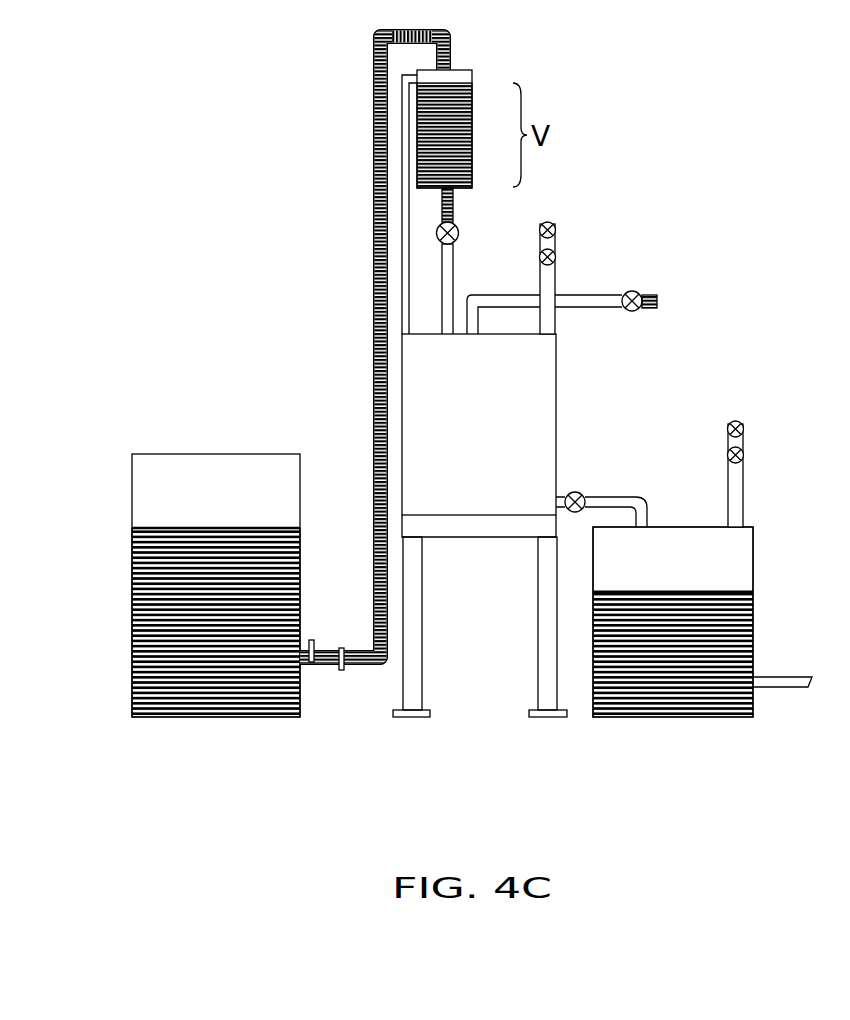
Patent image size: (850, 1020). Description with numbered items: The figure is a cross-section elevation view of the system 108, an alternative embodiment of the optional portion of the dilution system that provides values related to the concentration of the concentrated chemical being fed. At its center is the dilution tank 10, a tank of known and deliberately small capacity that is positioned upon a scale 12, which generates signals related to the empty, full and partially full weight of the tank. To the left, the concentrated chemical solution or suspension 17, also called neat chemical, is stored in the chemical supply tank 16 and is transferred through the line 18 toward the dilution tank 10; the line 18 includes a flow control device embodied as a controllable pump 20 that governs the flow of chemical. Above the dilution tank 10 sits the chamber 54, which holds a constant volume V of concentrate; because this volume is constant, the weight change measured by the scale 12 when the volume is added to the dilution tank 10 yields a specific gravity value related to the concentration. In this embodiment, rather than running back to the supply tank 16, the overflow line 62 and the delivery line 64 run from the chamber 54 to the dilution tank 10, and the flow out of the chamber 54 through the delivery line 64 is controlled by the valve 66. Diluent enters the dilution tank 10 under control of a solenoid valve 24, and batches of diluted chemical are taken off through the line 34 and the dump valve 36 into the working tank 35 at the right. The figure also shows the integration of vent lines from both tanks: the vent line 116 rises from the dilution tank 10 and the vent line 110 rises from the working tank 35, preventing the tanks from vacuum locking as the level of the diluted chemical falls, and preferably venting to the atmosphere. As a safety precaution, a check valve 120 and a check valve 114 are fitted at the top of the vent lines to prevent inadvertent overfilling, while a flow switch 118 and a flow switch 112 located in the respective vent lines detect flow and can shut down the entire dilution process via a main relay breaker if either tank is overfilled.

The dilution tank 10 is at (557, 432).
The scale 12 is at (528, 523).
The chemical supply tank 16 is at (220, 452).
The concentrated chemical solution or suspension 17 is at (198, 707).
The line 18 is at (372, 495).
The controllable pump 20 is at (320, 664).
The solenoid valve 24 is at (636, 311).
The line 34 is at (649, 506).
The working tank 35 is at (733, 580).
The dump valve 36 is at (583, 493).
The chamber 54 is at (473, 74).
The overflow line 62 is at (402, 157).
The delivery line 64 is at (453, 195).
The valve 66 is at (456, 241).
The system 108 is at (305, 773).
The vent line 110 is at (745, 508).
The flow switch 112 is at (742, 458).
The check valve 114 is at (742, 428).
The vent line 116 is at (557, 318).
The flow switch 118 is at (556, 258).
The check valve 120 is at (556, 229).